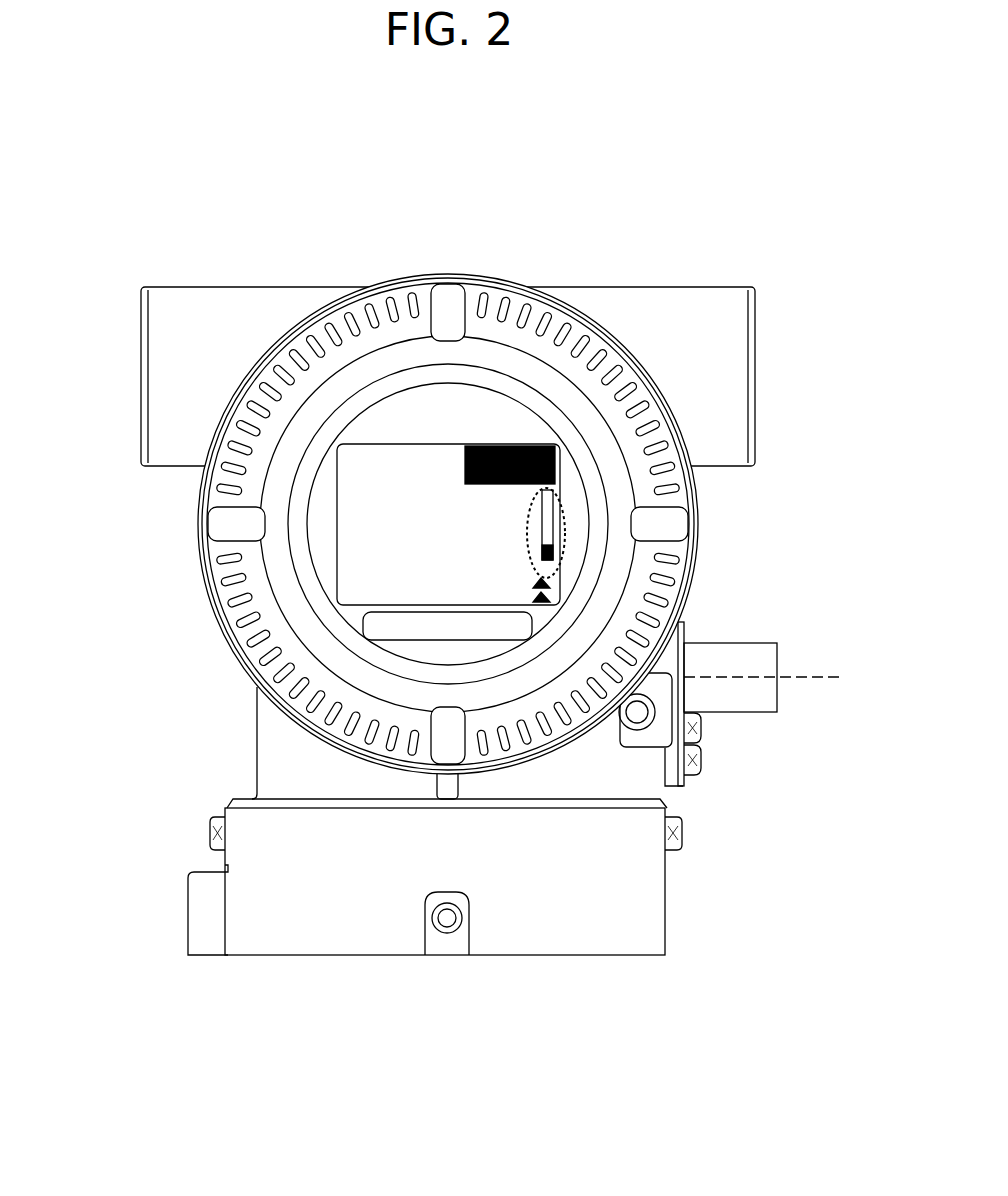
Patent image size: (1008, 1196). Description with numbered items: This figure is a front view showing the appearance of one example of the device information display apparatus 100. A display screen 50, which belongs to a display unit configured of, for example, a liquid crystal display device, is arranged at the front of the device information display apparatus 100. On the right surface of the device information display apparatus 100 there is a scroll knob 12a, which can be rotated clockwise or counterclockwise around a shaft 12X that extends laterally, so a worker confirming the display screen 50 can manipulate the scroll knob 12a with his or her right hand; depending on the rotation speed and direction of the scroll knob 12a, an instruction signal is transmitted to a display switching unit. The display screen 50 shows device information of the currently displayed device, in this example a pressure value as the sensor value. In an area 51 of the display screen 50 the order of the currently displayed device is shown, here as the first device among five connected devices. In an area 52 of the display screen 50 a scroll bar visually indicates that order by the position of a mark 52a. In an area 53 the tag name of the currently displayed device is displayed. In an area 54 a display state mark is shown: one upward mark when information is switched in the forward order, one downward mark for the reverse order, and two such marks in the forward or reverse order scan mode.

The device information display apparatus 100 is at (106, 266).
The display screen 50 is at (338, 562).
The area 53 is at (398, 440).
The area 51 is at (565, 460).
The area 52 is at (569, 519).
The mark 52a is at (562, 552).
The area 54 is at (562, 591).
The shaft 12X is at (823, 677).
The scroll knob 12a is at (755, 712).